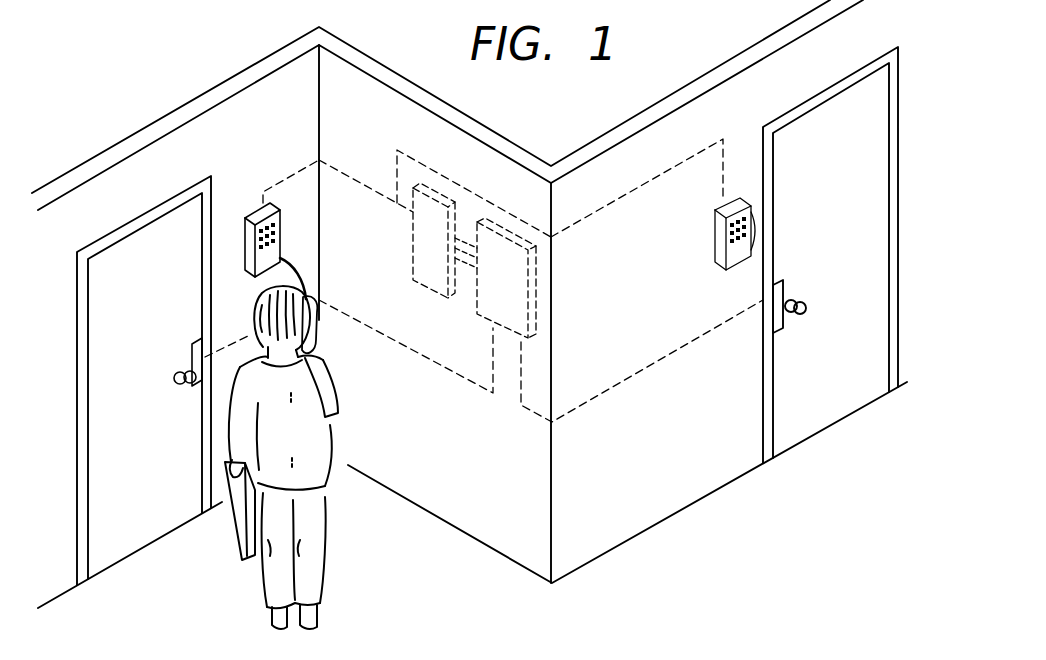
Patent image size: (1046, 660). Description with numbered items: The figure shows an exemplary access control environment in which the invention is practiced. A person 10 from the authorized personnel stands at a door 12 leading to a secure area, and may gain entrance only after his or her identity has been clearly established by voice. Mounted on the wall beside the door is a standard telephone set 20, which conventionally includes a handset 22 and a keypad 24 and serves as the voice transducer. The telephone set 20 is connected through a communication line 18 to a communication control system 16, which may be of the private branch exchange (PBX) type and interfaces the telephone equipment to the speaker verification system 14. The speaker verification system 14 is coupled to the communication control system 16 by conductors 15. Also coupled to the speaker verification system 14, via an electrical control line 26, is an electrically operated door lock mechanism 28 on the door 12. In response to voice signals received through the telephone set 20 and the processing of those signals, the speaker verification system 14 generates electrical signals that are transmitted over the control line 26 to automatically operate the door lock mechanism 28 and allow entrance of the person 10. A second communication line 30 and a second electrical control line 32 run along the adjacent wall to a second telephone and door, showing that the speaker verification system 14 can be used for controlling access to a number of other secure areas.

The authorized personnel 10 is at (318, 433).
The door 12 is at (98, 317).
The speaker verification system 14 is at (533, 287).
The conductors 15 is at (466, 272).
The communication control system 16 is at (417, 274).
The communication line 18 is at (347, 173).
The telephone set 20 is at (292, 174).
The handset 22 is at (330, 296).
The keypad 24 is at (279, 233).
The electrical control line 26 is at (437, 363).
The door lock mechanism 28 is at (195, 347).
The communication line 30 is at (622, 198).
The electrical control line 32 is at (643, 372).